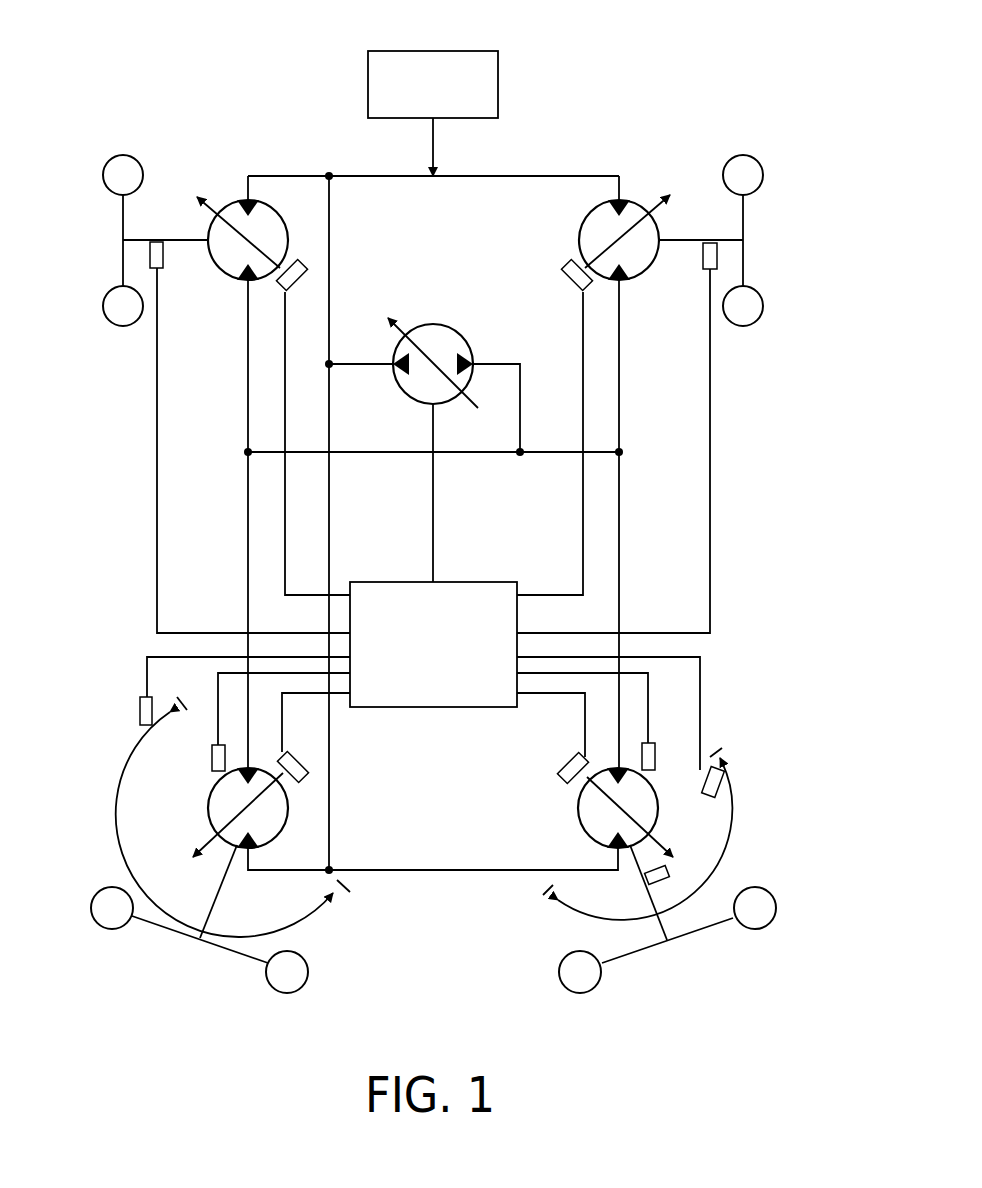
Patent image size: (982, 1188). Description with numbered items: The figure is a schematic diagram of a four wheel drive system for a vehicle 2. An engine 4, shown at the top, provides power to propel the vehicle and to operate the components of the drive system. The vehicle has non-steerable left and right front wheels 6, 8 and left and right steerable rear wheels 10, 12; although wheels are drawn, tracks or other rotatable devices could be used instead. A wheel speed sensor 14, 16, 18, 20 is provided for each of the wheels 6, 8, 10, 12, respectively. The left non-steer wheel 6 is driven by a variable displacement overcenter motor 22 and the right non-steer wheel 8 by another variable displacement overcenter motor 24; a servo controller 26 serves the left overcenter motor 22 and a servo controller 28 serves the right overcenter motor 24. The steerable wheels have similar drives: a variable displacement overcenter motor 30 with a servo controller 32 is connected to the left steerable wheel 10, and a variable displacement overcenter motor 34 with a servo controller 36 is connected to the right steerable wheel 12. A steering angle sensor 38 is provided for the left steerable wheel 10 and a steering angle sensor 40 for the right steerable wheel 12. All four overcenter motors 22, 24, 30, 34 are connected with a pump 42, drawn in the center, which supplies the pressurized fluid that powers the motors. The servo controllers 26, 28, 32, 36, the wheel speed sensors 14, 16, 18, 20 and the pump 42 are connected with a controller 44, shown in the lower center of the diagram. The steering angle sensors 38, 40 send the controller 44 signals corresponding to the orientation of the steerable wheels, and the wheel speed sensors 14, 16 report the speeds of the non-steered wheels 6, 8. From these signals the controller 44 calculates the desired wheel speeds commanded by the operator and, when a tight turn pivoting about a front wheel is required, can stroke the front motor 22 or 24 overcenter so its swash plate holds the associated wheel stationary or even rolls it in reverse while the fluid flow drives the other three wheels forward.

The vehicle 2 is at (417, 437).
The engine 4 is at (497, 73).
The left front wheel 6 is at (123, 155).
The right front wheel 8 is at (757, 317).
The left steerable rear wheel 10 is at (105, 920).
The right steerable rear wheel 12 is at (767, 920).
The wheel speed sensor 14 is at (160, 257).
The wheel speed sensor 16 is at (702, 258).
The wheel speed sensor 18 is at (212, 758).
The wheel speed sensor 20 is at (650, 760).
The variable displacement overcenter motor 22 is at (266, 218).
The variable displacement overcenter motor 24 is at (580, 223).
The servo controller 26 is at (297, 263).
The servo controller 28 is at (568, 266).
The variable displacement overcenter motor 30 is at (277, 812).
The servo controller 32 is at (297, 770).
The variable displacement overcenter motor 34 is at (590, 808).
The servo controller 36 is at (568, 763).
The steering angle sensor 38 is at (140, 713).
The steering angle sensor 40 is at (703, 787).
The pump 42 is at (432, 323).
The controller 44 is at (483, 582).